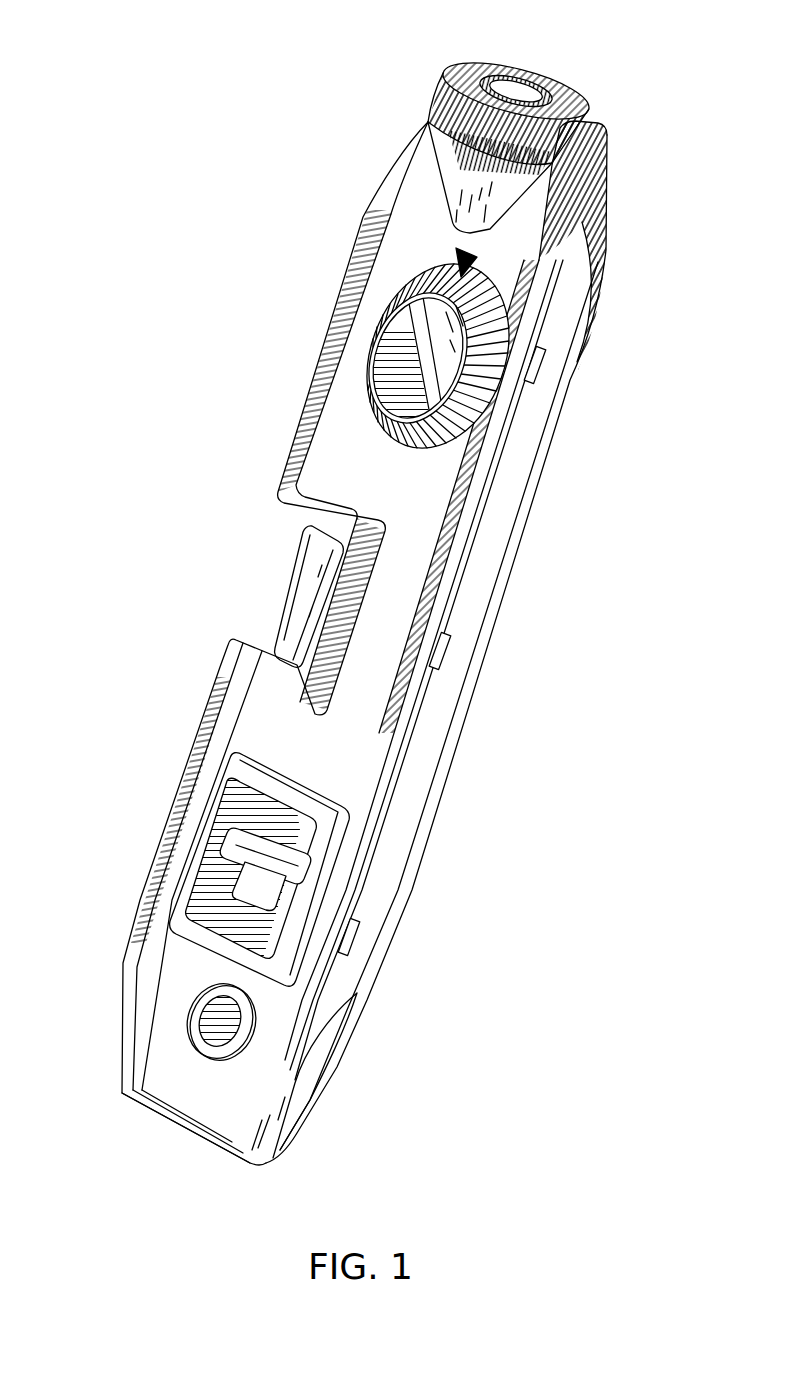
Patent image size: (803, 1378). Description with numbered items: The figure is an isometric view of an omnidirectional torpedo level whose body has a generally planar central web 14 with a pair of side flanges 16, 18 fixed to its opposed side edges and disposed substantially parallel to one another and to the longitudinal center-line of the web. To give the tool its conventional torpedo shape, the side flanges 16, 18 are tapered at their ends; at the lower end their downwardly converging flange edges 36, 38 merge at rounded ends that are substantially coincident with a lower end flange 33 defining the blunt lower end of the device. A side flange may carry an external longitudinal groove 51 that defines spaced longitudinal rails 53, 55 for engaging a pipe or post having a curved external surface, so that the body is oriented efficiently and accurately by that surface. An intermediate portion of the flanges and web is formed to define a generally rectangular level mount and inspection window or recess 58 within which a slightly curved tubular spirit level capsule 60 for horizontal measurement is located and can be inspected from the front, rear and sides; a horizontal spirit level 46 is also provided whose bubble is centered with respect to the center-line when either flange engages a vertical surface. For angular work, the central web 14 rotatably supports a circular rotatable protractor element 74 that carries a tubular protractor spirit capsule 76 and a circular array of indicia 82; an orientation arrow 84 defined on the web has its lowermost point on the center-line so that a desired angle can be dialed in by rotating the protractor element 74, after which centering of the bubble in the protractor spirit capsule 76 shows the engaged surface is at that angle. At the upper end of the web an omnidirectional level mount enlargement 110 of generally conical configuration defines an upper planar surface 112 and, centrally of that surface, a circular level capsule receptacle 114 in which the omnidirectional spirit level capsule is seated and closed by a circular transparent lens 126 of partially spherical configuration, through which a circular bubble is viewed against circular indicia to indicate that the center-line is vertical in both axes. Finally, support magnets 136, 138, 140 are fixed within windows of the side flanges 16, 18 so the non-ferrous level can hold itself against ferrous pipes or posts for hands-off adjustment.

The central web 14 is at (357, 405).
The side flange 16 is at (301, 430).
The side flange 18 is at (438, 570).
The lower end flange 33 is at (156, 1108).
The downwardly converging flange edge 36 is at (130, 1003).
The downwardly converging flange edge 38 is at (282, 1048).
The horizontal spirit level 46 is at (222, 836).
The external longitudinal groove 51 is at (503, 507).
The longitudinal rail 53 is at (497, 427).
The longitudinal rail 55 is at (446, 767).
The intermediate level mount and inspection recess or window 58 is at (294, 533).
The tubular spirit level capsule 60 is at (302, 600).
The circular rotatable protractor element 74 is at (391, 350).
The tubular protractor spirit capsule 76 is at (450, 330).
The circular array of indicia 82 is at (405, 288).
The orientation arrow 84 is at (462, 252).
The omnidirectional level mount enlargement 110 is at (434, 84).
The upper planar surface 112 is at (582, 92).
The circular level capsule receptacle 114 is at (537, 90).
The circular transparent lens 126 is at (508, 88).
The support magnet 136 is at (547, 367).
The support magnet 138 is at (452, 652).
The support magnet 140 is at (361, 938).